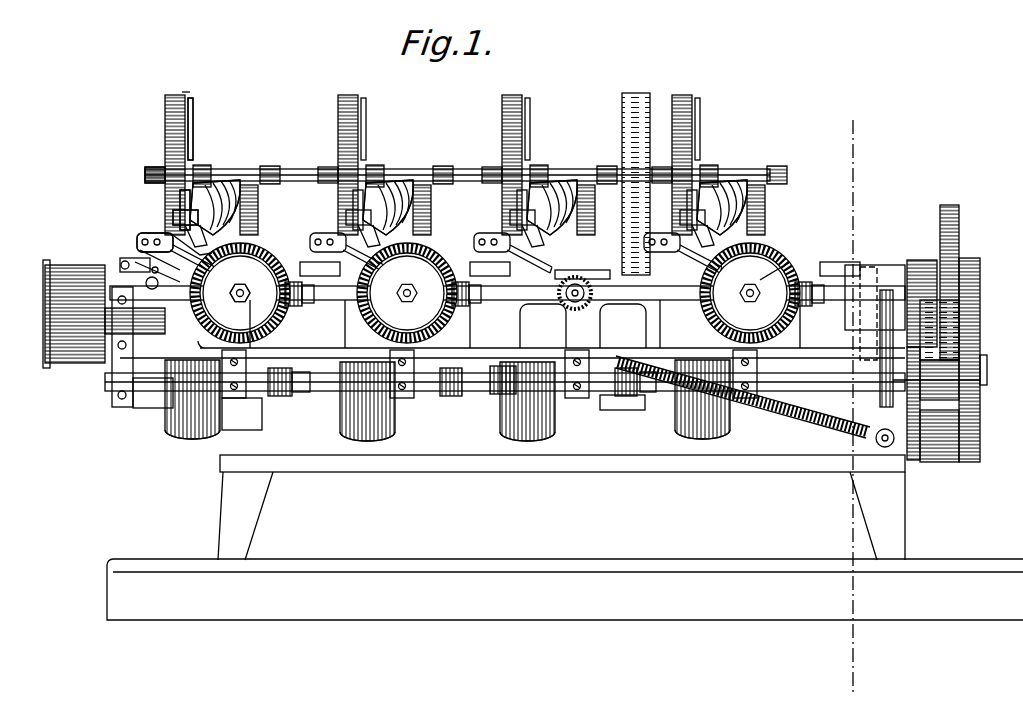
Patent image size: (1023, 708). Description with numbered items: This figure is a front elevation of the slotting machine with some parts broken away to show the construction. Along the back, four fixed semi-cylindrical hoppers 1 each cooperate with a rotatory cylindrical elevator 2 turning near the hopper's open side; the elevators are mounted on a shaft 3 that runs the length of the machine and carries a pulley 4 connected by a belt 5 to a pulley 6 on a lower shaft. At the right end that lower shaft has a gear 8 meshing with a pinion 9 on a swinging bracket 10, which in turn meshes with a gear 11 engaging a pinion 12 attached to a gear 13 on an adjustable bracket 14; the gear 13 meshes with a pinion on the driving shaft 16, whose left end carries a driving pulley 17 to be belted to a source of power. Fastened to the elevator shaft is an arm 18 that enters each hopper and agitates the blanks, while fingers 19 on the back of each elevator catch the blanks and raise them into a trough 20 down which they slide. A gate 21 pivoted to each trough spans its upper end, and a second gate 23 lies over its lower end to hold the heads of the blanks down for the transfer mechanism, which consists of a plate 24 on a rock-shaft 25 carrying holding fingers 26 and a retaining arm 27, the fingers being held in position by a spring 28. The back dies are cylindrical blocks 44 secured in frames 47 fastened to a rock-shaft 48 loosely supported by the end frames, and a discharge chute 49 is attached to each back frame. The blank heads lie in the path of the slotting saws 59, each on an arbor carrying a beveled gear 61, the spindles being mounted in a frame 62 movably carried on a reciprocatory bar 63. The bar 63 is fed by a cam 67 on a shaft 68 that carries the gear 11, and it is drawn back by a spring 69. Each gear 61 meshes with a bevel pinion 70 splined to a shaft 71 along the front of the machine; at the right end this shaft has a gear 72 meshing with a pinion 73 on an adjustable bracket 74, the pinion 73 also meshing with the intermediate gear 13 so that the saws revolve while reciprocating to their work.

The hopper 1 is at (728, 168).
The elevator 2 is at (680, 130).
The shaft 3 is at (447, 169).
The pulley 4 is at (622, 128).
The belt 5 is at (636, 410).
The pulley 6 is at (590, 410).
The gear 8 is at (978, 400).
The pinion 9 is at (953, 465).
The swinging bracket 10 is at (912, 470).
The gear 11 is at (978, 322).
The pinion 12 is at (975, 260).
The gear 13 is at (956, 214).
The adjustable bracket 14 is at (915, 260).
The driving shaft 16 is at (95, 382).
The driving pulley 17 is at (82, 366).
The arm 18 is at (195, 106).
The finger 19 is at (188, 92).
The trough 20 is at (180, 190).
The gate 21 is at (165, 162).
The gate 23 is at (178, 215).
The plate 24 is at (140, 252).
The rock-shaft 25 is at (176, 349).
The holding fingers 26 is at (125, 268).
The retaining arm 27 is at (170, 234).
The spring 28 is at (138, 242).
The back die 44 is at (232, 285).
The frame 47 is at (240, 305).
The rock-shaft 48 is at (290, 400).
The discharge chute 49 is at (195, 438).
The slotting saw 59 is at (592, 271).
The beveled gear 61 is at (789, 262).
The frame 62 is at (583, 326).
The reciprocatory bar 63 is at (777, 405).
The cam 67 is at (812, 418).
The shaft 68 is at (742, 415).
The spring 69 is at (690, 430).
The bevel pinion 70 is at (809, 262).
The shaft 71 is at (776, 263).
The gear 72 is at (868, 274).
The pinion 73 is at (982, 343).
The adjustable bracket 74 is at (982, 422).